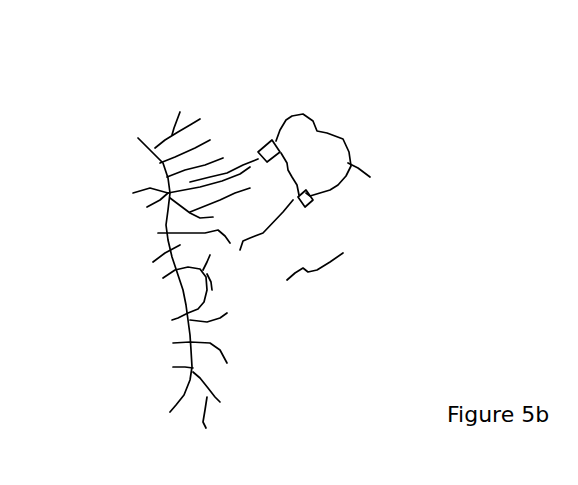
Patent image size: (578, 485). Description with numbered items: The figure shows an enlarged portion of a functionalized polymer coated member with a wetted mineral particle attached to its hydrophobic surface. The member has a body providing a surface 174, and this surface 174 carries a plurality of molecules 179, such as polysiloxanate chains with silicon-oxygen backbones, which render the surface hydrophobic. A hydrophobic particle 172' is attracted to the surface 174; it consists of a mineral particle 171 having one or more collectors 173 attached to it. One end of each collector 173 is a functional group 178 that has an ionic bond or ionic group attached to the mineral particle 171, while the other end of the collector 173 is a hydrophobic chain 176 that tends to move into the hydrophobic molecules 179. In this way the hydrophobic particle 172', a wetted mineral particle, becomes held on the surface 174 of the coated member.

The mineral particle 171 is at (378, 177).
The hydrophobic particle 172' is at (372, 120).
The collector 173 is at (316, 277).
The surface 174 is at (108, 253).
The hydrophobic chain 176 is at (245, 156).
The functional group 178 is at (272, 164).
The hydrophobic molecules 179 is at (255, 356).